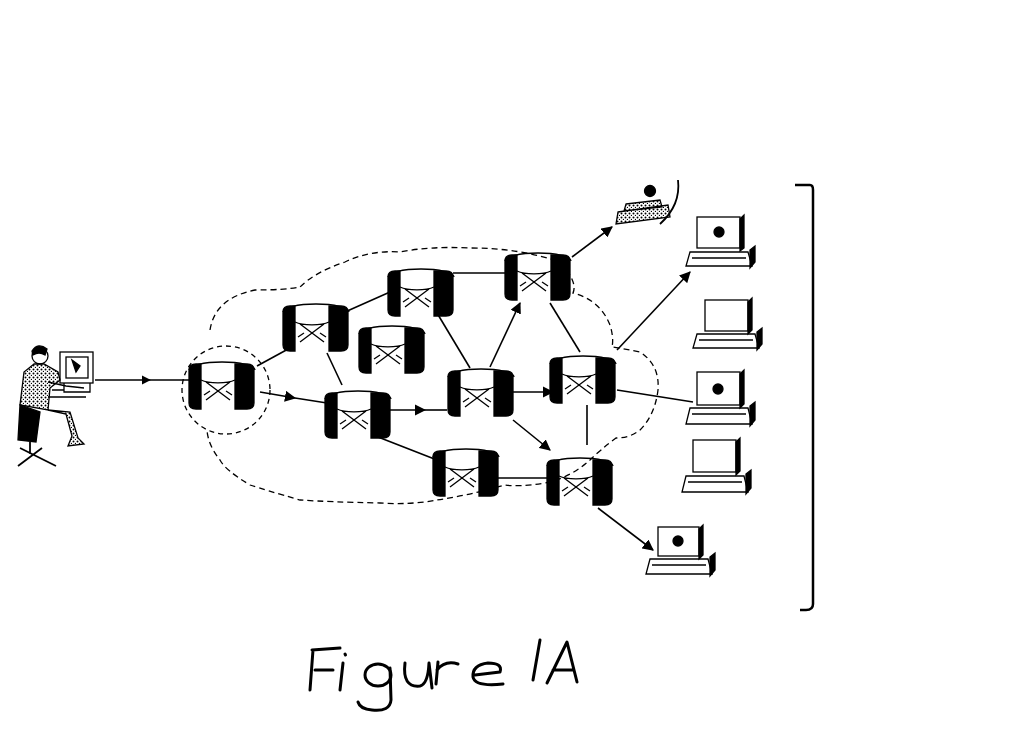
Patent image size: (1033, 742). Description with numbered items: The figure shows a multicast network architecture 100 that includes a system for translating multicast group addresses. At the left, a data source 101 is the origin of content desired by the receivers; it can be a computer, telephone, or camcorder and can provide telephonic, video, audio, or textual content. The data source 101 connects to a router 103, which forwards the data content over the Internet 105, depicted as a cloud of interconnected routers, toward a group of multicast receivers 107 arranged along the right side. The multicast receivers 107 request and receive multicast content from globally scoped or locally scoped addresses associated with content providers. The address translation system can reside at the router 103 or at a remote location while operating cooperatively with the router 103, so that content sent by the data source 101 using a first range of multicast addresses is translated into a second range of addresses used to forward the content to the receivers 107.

The multicast network architecture 100 is at (458, 327).
The data source 101 is at (103, 393).
The router 103 is at (211, 372).
The Internet 105 is at (422, 376).
The multicast receivers 107 is at (772, 397).